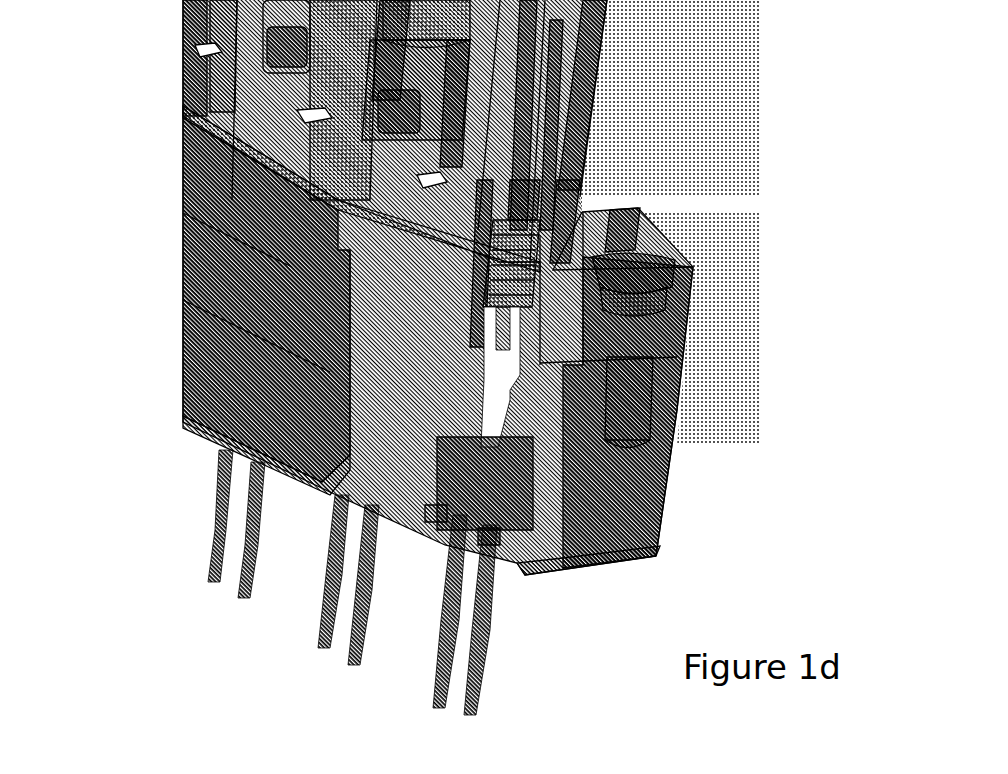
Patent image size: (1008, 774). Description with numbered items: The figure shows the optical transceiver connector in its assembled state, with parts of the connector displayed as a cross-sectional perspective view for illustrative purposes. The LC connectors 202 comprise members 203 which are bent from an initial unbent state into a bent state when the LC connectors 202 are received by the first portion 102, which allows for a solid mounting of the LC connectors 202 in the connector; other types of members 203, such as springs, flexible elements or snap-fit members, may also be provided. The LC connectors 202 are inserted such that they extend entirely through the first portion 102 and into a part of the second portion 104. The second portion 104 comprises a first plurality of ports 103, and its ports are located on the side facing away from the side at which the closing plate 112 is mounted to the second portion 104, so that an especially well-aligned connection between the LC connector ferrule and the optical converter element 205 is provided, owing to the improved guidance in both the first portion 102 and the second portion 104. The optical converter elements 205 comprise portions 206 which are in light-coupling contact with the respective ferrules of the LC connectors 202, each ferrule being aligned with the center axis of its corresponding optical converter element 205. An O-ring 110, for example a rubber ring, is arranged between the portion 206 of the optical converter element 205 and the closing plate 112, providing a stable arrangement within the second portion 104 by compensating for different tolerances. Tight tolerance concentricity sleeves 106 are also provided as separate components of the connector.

The first portion 102 is at (184, 150).
The first plurality of ports 103 is at (487, 540).
The second portion 104 is at (185, 318).
The concentricity sleeves 106 is at (520, 458).
The O-ring 110 is at (433, 513).
The closing plate 112 is at (590, 563).
The LC connectors 202 is at (580, 187).
The members 203 is at (196, 103).
The optical converter element 205 is at (478, 667).
The portions 206 is at (445, 488).